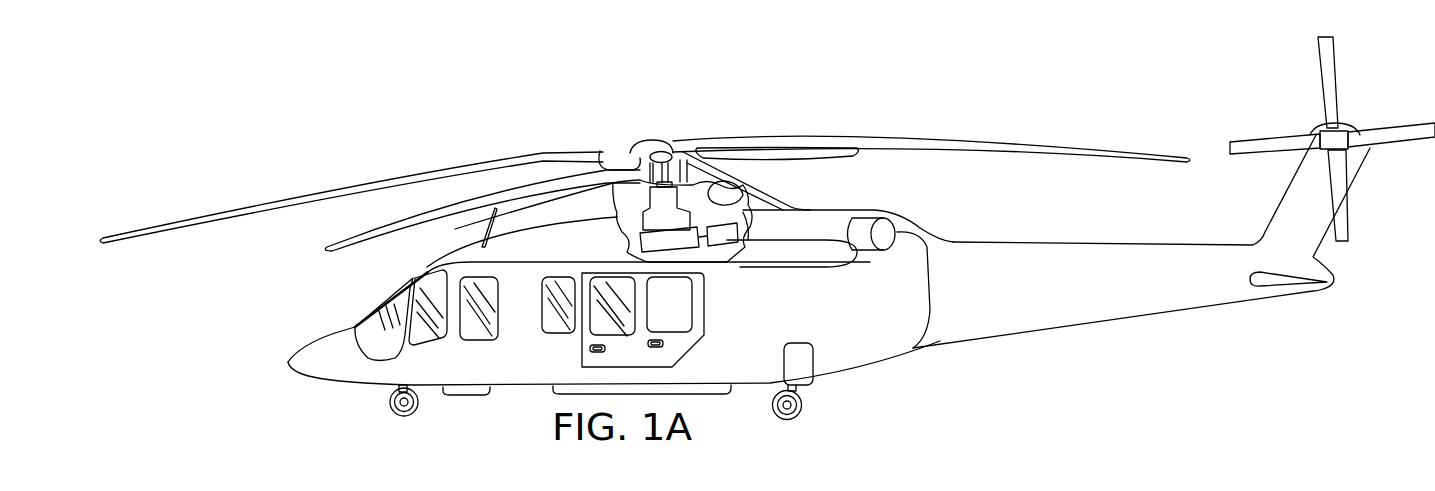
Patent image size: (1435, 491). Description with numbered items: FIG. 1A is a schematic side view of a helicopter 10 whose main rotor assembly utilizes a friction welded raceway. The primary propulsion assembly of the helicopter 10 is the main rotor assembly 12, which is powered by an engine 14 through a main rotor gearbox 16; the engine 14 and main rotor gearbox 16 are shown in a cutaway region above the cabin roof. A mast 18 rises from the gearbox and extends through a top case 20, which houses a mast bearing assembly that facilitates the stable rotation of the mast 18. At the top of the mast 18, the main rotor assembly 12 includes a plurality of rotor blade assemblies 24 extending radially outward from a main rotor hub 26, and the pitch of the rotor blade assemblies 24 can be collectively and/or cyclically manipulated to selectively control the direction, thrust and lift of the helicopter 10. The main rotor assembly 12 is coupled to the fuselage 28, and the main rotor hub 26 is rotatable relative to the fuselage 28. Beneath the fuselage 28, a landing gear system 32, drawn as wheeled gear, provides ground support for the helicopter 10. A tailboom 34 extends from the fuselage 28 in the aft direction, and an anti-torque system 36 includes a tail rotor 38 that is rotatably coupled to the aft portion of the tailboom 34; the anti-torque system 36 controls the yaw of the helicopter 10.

The helicopter 10 is at (442, 137).
The main rotor assembly 12 is at (633, 134).
The engine 14 is at (723, 247).
The main rotor gearbox 16 is at (675, 249).
The mast 18 is at (662, 178).
The top case 20 is at (571, 206).
The rotor blade assemblies 24 is at (213, 207).
The main rotor hub 26 is at (657, 139).
The fuselage 28 is at (853, 368).
The landing gear system 32 is at (772, 403).
The tailboom 34 is at (1111, 243).
The anti-torque system 36 is at (1360, 112).
The tail rotor 38 is at (1322, 152).